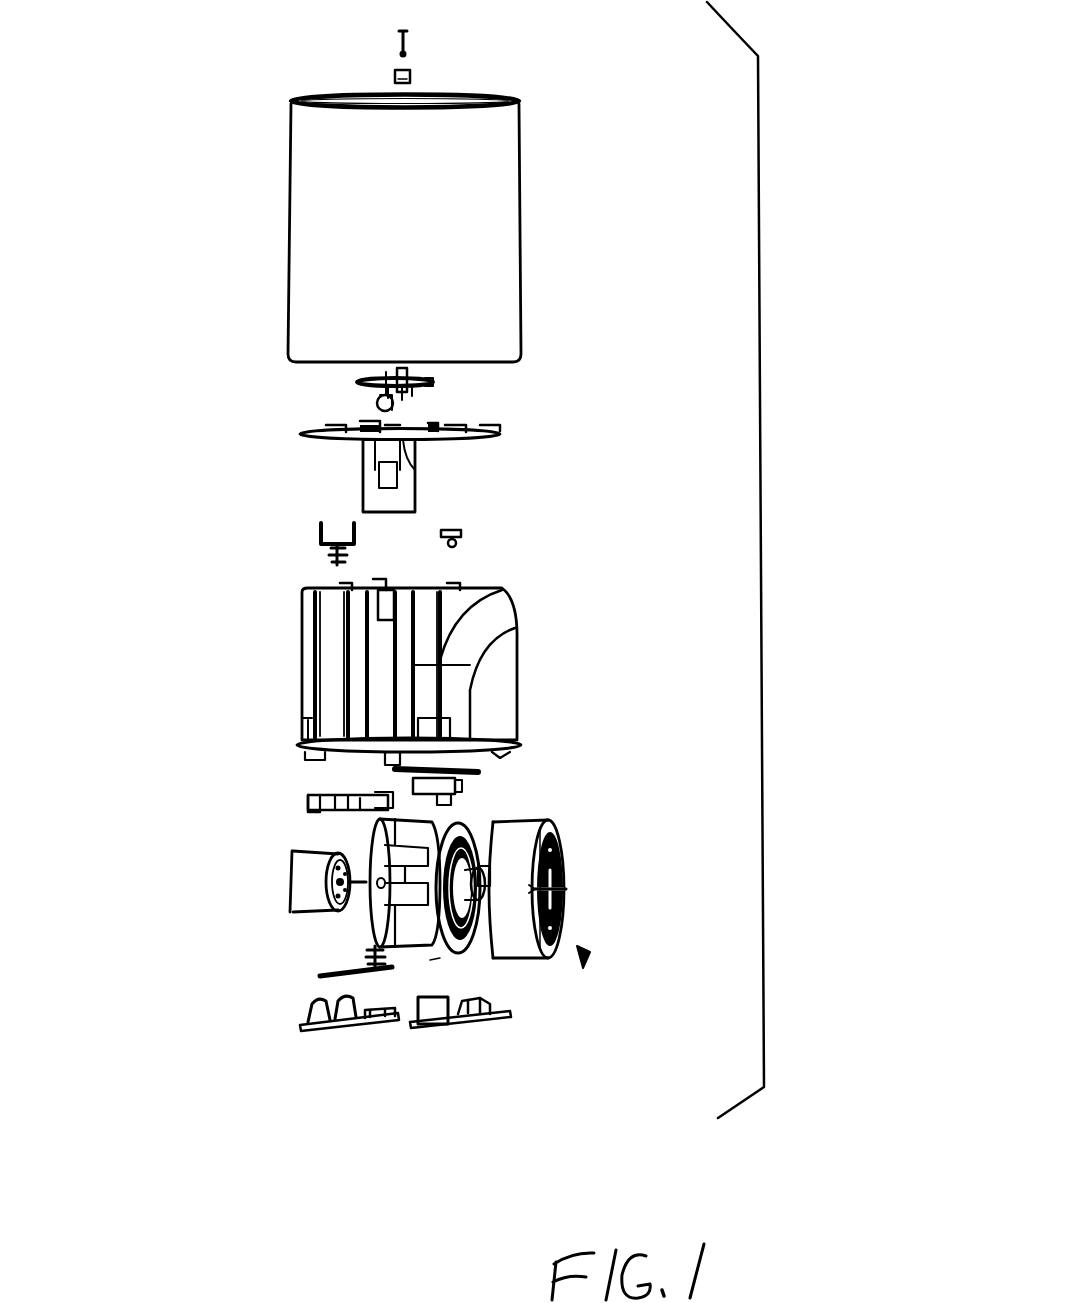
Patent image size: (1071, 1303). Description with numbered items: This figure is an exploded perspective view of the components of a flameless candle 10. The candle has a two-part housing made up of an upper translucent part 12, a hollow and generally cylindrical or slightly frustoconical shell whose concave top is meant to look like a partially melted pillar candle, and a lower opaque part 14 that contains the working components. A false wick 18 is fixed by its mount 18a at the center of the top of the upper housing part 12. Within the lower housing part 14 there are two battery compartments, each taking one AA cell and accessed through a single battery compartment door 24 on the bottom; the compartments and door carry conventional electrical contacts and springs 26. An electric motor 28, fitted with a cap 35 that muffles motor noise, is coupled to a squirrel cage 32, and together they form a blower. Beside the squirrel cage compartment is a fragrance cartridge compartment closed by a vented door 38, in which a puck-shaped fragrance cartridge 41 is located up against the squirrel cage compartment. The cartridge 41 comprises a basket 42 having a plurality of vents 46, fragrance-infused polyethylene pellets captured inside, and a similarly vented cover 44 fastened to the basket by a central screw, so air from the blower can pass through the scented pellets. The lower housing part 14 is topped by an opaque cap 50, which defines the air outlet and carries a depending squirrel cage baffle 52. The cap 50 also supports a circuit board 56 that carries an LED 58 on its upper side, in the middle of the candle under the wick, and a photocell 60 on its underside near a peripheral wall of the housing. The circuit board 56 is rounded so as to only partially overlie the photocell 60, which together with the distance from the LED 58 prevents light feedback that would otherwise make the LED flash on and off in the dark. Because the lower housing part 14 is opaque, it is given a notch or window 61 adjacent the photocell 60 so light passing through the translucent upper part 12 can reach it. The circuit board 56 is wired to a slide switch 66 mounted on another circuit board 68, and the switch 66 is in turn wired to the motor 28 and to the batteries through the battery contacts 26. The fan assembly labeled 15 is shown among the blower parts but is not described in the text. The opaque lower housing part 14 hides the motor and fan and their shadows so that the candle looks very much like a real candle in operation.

The flameless candle 10 is at (764, 597).
The upper translucent housing part 12 is at (521, 240).
The lower opaque housing part 14 is at (510, 680).
The fan assembly 15 is at (420, 975).
The false wick 18 is at (406, 42).
The wick mount 18a is at (407, 78).
The battery compartment door 24 is at (360, 1028).
The electrical contacts and springs 26 is at (325, 551).
The electric motor 28 is at (289, 900).
The squirrel cage 32 is at (372, 860).
The motor cap 35 is at (312, 799).
The fragrance cartridge compartment door 38 is at (520, 1015).
The fragrance cartridge 41 is at (588, 960).
The basket 42 is at (560, 880).
The cover 44 is at (520, 838).
The basket vents 46 is at (567, 870).
The opaque cap 50 is at (305, 437).
The squirrel cage baffle 52 is at (418, 470).
The circuit board 56 is at (434, 382).
The LED 58 is at (435, 370).
The photocell 60 is at (380, 397).
The window 61 is at (393, 612).
The slide switch 66 is at (468, 782).
The second circuit board 68 is at (478, 762).